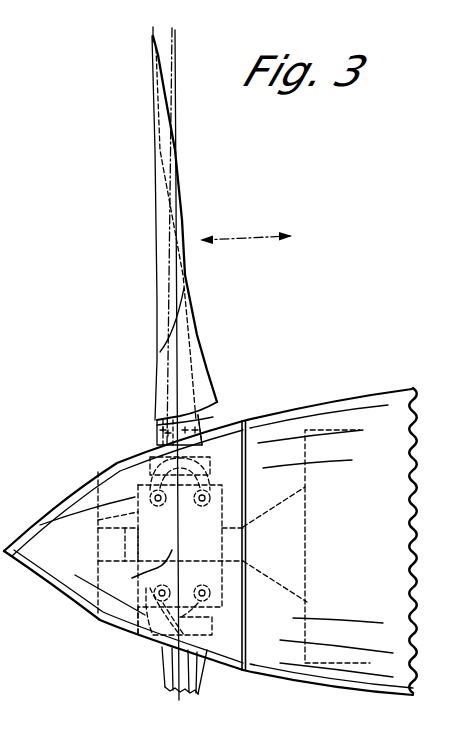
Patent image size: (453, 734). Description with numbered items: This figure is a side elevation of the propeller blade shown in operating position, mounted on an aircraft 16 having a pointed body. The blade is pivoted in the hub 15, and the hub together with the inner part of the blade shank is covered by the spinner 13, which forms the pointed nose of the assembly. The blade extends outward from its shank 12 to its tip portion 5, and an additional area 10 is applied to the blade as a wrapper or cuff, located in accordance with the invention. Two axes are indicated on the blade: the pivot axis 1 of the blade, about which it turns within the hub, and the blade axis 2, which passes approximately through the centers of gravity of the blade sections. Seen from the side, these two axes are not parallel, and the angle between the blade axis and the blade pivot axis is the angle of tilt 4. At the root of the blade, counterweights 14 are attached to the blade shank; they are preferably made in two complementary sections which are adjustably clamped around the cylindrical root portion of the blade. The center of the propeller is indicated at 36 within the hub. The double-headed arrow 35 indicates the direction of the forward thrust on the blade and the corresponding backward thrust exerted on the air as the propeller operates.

The pivot axis 1 is at (176, 87).
The blade axis 2 is at (153, 38).
The angle of tilt 4 is at (163, 32).
The tip portion 5 is at (170, 140).
The additional area 10 is at (203, 382).
The shank 12 is at (157, 437).
The spinner 13 is at (100, 471).
The counterweights 14 is at (205, 482).
The hub 15 is at (98, 528).
The aircraft 16 is at (340, 393).
The direction of thrust 35 is at (246, 229).
The center of the propeller 36 is at (139, 572).